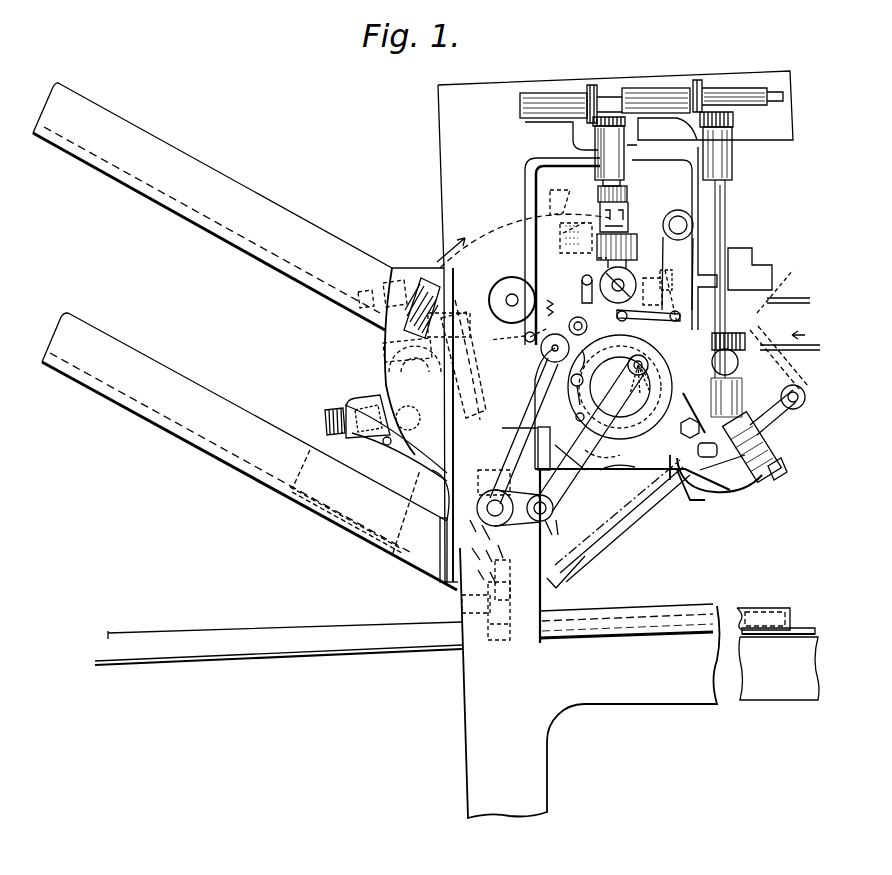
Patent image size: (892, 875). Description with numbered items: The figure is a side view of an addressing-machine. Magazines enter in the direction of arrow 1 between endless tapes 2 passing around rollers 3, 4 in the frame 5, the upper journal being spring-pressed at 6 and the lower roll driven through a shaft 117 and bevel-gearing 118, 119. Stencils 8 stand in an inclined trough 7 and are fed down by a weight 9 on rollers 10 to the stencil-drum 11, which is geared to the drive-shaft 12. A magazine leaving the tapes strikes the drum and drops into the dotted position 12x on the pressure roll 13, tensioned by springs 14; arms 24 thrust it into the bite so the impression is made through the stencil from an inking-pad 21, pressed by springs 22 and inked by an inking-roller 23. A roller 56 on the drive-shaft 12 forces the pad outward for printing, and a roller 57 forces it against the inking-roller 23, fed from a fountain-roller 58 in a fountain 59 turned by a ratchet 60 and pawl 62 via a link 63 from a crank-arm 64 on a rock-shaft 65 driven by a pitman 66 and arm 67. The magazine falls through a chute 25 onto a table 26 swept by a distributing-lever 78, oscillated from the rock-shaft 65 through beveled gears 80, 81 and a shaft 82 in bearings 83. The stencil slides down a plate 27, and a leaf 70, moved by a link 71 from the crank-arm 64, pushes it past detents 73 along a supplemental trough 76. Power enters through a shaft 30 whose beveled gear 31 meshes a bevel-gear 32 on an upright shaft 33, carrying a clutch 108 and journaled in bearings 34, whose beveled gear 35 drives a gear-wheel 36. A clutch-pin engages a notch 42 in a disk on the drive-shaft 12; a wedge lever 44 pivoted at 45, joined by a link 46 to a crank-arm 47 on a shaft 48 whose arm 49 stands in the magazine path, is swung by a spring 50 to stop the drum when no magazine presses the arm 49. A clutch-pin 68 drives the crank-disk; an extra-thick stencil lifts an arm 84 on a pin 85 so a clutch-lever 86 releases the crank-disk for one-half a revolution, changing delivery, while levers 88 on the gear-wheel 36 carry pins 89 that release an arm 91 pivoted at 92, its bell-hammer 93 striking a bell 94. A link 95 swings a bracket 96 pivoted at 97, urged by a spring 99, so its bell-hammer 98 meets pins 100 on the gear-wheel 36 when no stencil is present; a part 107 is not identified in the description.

The arrow 1 is at (806, 325).
The endless tapes 2 is at (790, 357).
The roller 3 is at (760, 313).
The roller 4 is at (739, 362).
The frame 5 is at (718, 262).
The spring-pressed journal 6 is at (753, 275).
The inclined trough 7 is at (363, 250).
The stencils 8 is at (404, 320).
The weight 9 is at (382, 276).
The rollers 10 is at (362, 300).
The stencil-drum 11 is at (464, 239).
The drive-shaft 12 is at (550, 386).
The magazine position 12x is at (770, 412).
The pressure roll or platen 13 is at (772, 463).
The springs 14 is at (774, 482).
The inking-pad 21 is at (518, 470).
The springs 22 is at (563, 233).
The inking-roller 23 is at (383, 350).
The arms 24 is at (535, 194).
The chute 25 is at (663, 500).
The table 26 is at (620, 628).
The plate 27 is at (600, 475).
The shaft 30 is at (608, 92).
The beveled gear 31 is at (590, 85).
The bevel-gear 32 is at (595, 121).
The upright shaft 33 is at (624, 170).
The bearings 34 is at (624, 144).
The beveled gear 35 is at (668, 321).
The beveled gear-wheel 36 is at (570, 448).
The notch 42 is at (628, 367).
The wedge or clutch lever 44 is at (687, 460).
The pivot 45 is at (677, 482).
The link 46 is at (770, 440).
The crank-arm 47 is at (800, 392).
The shaft 48 is at (800, 400).
The finger or arm 49 is at (757, 338).
The spring 50 is at (722, 490).
The roller 56 is at (635, 468).
The roller 57 is at (470, 398).
The fountain-roller 58 is at (353, 396).
The fountain 59 is at (427, 450).
The ratchet 60 is at (397, 433).
The pawl 62 is at (383, 444).
The link 63 is at (480, 478).
The crank-arm 64 is at (450, 492).
The rock-shaft 65 is at (440, 532).
The link or pitman 66 is at (538, 438).
The arm 67 is at (554, 511).
The clutch-pin 68 is at (576, 418).
The plate or leaf 70 is at (557, 585).
The link 71 is at (557, 520).
The dogs or detents 73 is at (500, 580).
The supplemental trough 76 is at (333, 517).
The distributing-lever 78 is at (690, 610).
The beveled gear 80 is at (496, 489).
The beveled gear 81 is at (473, 542).
The shaft 82 is at (487, 610).
The bearings 83 is at (472, 618).
The arm 84 is at (632, 218).
The shaft or pin 85 is at (694, 224).
The clutch-lever 86 is at (700, 252).
The levers 88 is at (571, 381).
The pins 89 is at (602, 442).
The arm 91 is at (555, 311).
The pivot 92 is at (573, 318).
The bell-hammer 93 is at (524, 336).
The bell 94 is at (489, 300).
The link 95 is at (677, 300).
The bracket or plate 96 is at (598, 258).
The pivot 97 is at (610, 295).
The bell-hammer 98 is at (580, 280).
The spring 99 is at (666, 275).
The pins 100 is at (501, 432).
The nut 107 is at (600, 198).
The clutch 108 is at (533, 166).
The shaft 117 is at (725, 203).
The bevel-gearing 118 is at (703, 95).
The bevel-gearing 119 is at (793, 270).